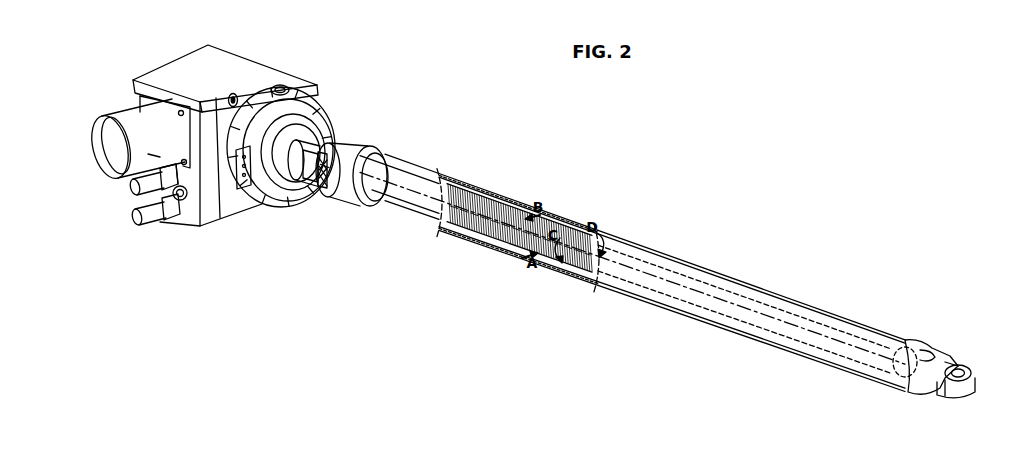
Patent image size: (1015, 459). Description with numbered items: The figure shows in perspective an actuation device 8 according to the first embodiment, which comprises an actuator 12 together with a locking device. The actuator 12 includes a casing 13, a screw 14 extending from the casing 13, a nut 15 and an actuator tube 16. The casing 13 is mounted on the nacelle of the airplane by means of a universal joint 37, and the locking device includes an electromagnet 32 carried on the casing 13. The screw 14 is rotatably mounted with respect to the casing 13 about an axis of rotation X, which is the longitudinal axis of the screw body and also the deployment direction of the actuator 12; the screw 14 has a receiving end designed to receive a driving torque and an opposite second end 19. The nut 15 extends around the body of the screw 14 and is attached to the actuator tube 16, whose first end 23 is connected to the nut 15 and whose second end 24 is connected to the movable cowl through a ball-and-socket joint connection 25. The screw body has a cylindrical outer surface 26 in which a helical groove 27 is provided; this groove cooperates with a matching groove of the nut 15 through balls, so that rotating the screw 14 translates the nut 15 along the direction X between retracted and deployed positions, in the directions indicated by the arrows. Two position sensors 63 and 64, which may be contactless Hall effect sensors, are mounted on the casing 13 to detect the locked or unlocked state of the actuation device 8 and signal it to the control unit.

The actuation device 8 is at (403, 63).
The actuator 12 is at (476, 173).
The casing 13 is at (228, 62).
The screw 14 is at (512, 209).
The nut 15 is at (296, 158).
The actuator tube 16 is at (513, 255).
The second end 19 is at (892, 340).
The first end 23 is at (369, 142).
The second end 24 is at (934, 348).
The ball-and-socket joint connection 25 is at (966, 369).
The cylindrical outer surface 26 is at (481, 200).
The helical groove 27 is at (470, 222).
The electromagnet 32 is at (136, 118).
The universal joint 37 is at (322, 97).
The position sensor 63 is at (133, 190).
The position sensor 64 is at (137, 220).
The axis of rotation X is at (836, 338).